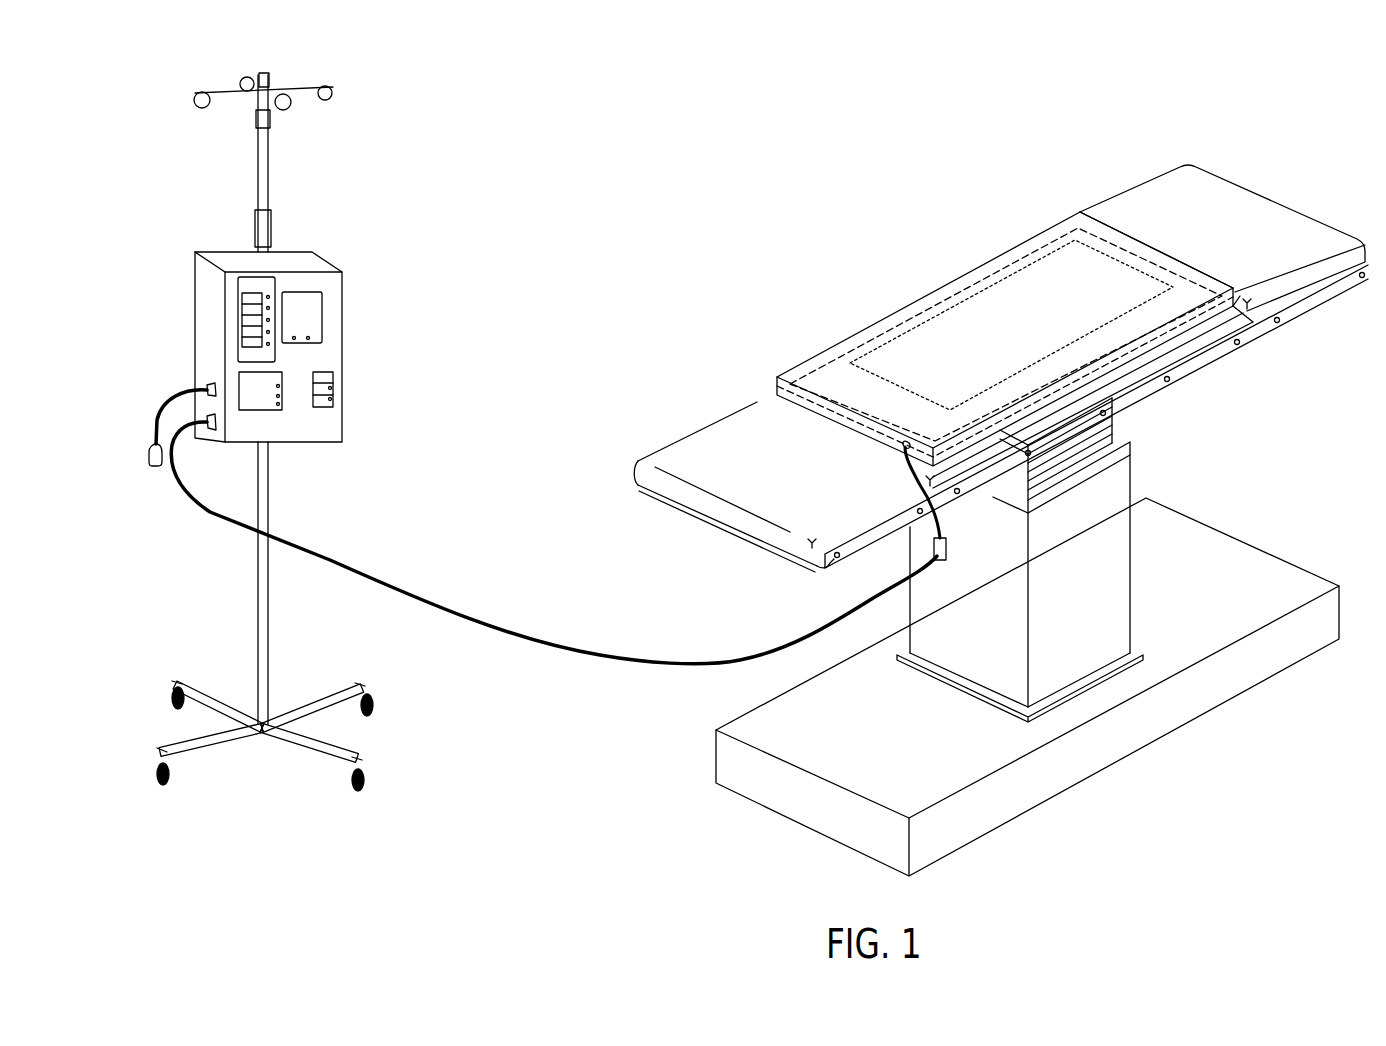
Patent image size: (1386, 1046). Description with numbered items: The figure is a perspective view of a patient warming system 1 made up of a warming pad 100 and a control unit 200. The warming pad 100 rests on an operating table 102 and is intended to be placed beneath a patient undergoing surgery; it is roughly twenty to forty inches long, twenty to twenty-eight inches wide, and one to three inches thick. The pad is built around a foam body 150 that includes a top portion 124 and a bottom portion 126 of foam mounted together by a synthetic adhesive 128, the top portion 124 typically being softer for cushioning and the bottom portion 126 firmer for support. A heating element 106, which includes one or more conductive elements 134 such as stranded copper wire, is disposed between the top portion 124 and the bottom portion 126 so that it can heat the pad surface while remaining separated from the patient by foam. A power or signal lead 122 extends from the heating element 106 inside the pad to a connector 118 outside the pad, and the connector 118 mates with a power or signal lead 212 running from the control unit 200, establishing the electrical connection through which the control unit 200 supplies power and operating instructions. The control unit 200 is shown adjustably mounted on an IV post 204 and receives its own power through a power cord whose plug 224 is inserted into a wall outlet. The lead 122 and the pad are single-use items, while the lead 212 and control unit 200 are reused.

The patient warming system 1 is at (1308, 108).
The warming pad 100 is at (1065, 190).
The operating table 102 is at (1203, 370).
The heating element 106 is at (890, 337).
The connector 118 is at (945, 564).
The power or signal lead 122 is at (943, 533).
The top portion 124 is at (1093, 226).
The bottom portion 126 is at (1244, 300).
The synthetic adhesive 128 is at (1222, 305).
The conductive elements 134 is at (990, 285).
The foam body 150 is at (1170, 257).
The control unit 200 is at (305, 243).
The IV post 204 is at (272, 503).
The power or signal lead 212 is at (503, 622).
The plug 224 is at (154, 470).